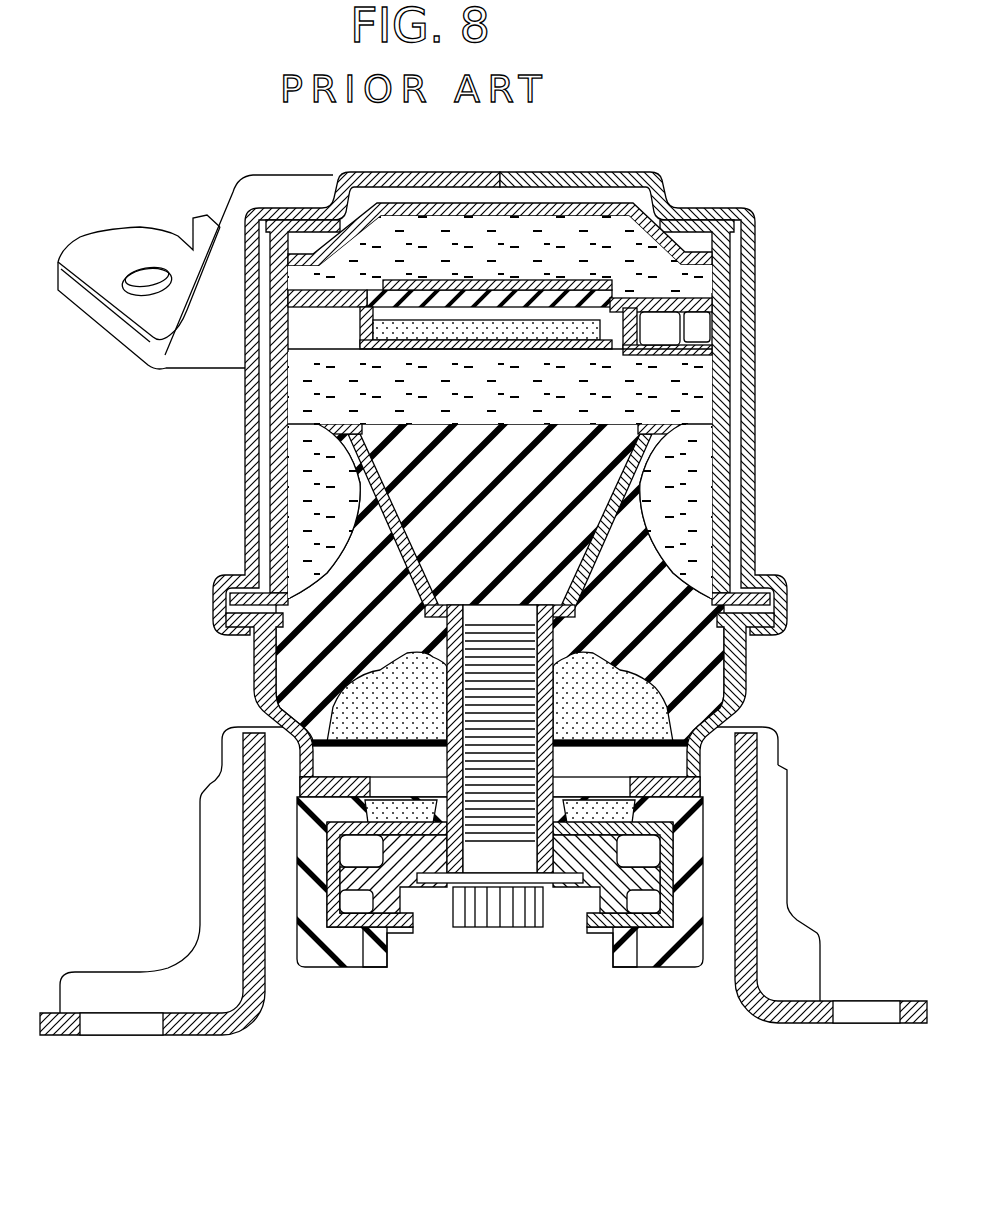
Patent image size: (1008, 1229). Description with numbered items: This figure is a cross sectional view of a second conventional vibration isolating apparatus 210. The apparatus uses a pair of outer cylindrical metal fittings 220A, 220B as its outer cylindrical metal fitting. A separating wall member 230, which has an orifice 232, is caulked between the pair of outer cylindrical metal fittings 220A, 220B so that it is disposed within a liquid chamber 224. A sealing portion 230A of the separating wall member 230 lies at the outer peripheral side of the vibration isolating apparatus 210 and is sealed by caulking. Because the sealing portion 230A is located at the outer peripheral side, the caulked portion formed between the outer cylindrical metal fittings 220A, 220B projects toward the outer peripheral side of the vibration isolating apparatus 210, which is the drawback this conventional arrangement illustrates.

The vibration isolating apparatus 210 is at (750, 162).
The outer cylindrical metal fitting 220A is at (744, 381).
The outer cylindrical metal fitting 220B is at (744, 681).
The liquid chamber 224 is at (318, 388).
The separating wall member 230 is at (730, 428).
The sealing portion 230A is at (770, 600).
The orifice 232 is at (735, 314).